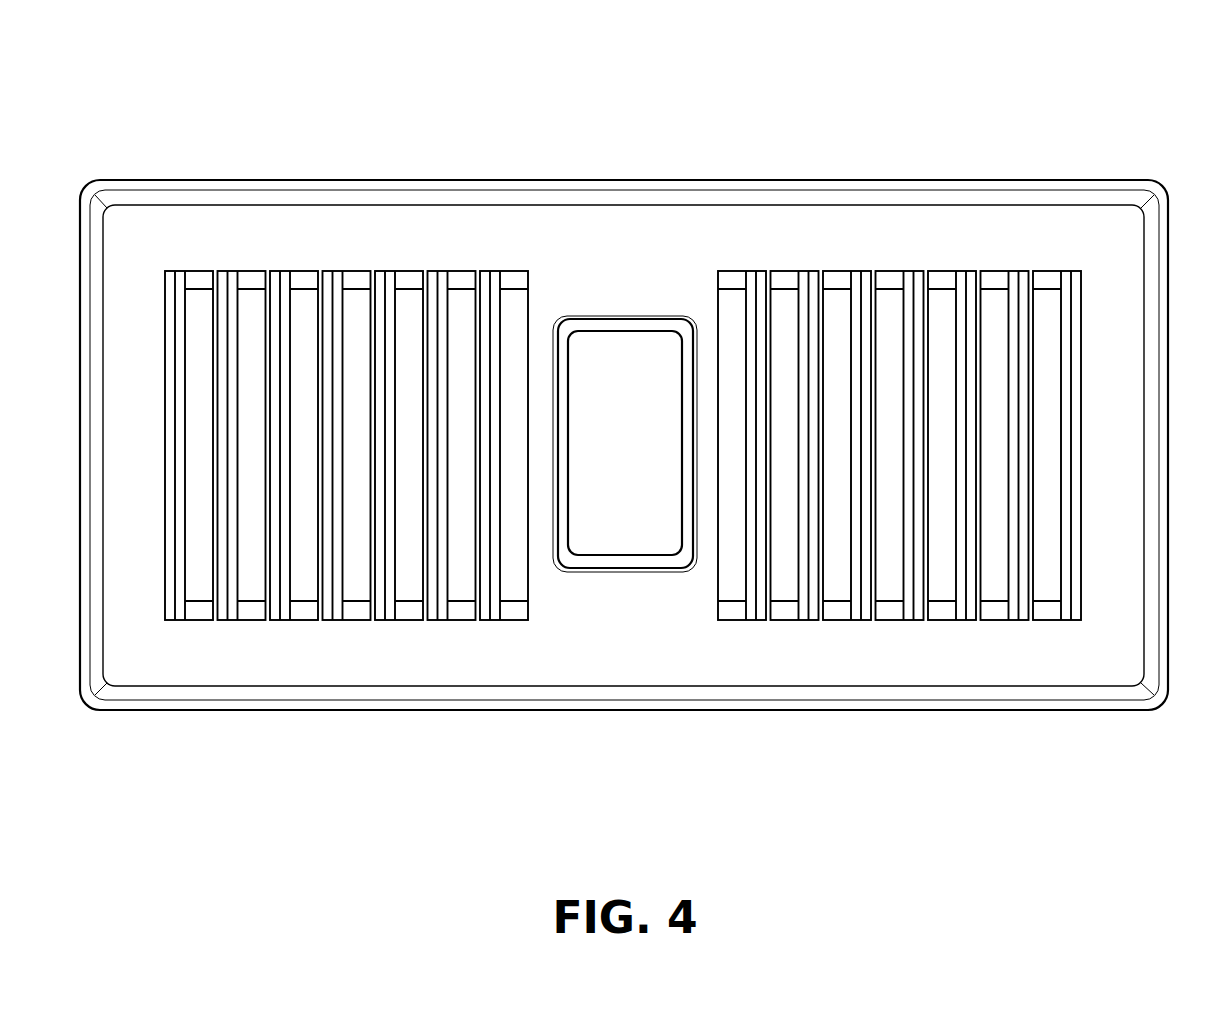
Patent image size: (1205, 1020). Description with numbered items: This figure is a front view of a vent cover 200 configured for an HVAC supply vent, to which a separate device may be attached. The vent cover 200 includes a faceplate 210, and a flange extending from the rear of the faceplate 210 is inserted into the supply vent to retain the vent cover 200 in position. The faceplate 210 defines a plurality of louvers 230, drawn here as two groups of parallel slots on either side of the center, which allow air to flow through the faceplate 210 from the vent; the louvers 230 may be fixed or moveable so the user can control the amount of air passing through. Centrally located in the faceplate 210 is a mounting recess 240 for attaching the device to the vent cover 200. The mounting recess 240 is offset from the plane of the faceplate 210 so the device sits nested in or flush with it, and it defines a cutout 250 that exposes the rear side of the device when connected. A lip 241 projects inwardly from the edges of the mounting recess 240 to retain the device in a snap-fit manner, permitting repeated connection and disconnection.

The vent cover 200 is at (618, 395).
The faceplate 210 is at (948, 230).
The louvers 230 is at (460, 271).
The mounting recess 240 is at (592, 563).
The lip 241 is at (642, 573).
The cutout 250 is at (625, 443).